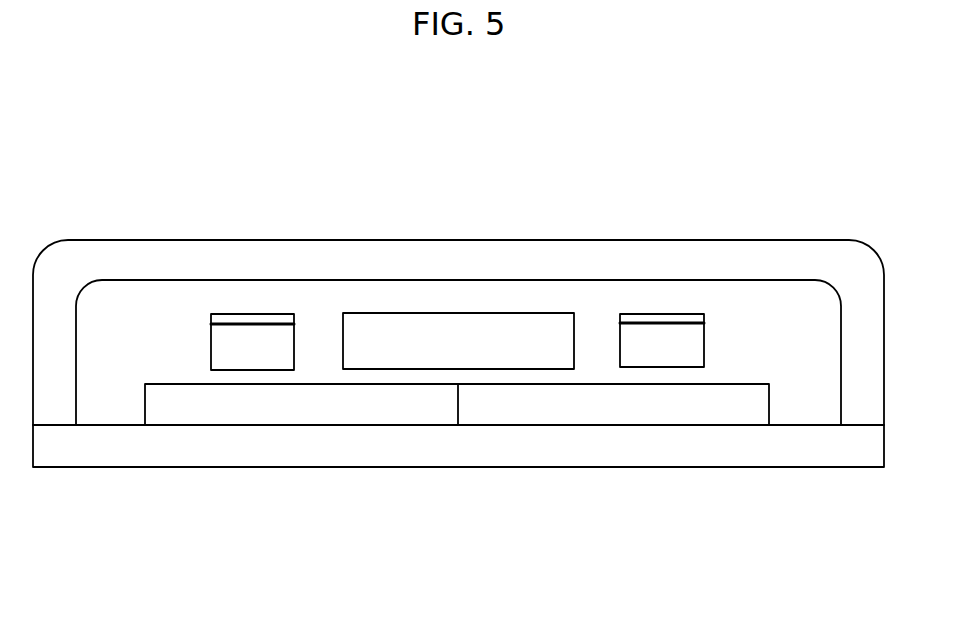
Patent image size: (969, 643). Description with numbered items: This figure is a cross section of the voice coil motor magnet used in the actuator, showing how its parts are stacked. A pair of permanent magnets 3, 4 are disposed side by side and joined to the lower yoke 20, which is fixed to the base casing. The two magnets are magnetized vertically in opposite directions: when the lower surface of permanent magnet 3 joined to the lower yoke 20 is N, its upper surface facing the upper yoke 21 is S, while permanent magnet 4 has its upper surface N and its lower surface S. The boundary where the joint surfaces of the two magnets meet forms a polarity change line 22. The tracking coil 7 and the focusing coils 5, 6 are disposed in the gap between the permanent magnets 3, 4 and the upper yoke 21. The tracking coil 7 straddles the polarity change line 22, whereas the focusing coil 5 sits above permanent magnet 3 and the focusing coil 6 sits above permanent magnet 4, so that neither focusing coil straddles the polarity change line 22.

The permanent magnet 3 is at (258, 412).
The permanent magnet 4 is at (556, 408).
The focusing coil 5 is at (241, 353).
The focusing coil 6 is at (674, 342).
The tracking coil 7 is at (435, 342).
The lower yoke 20 is at (705, 436).
The upper yoke 21 is at (517, 262).
The polarity change line 22 is at (453, 416).